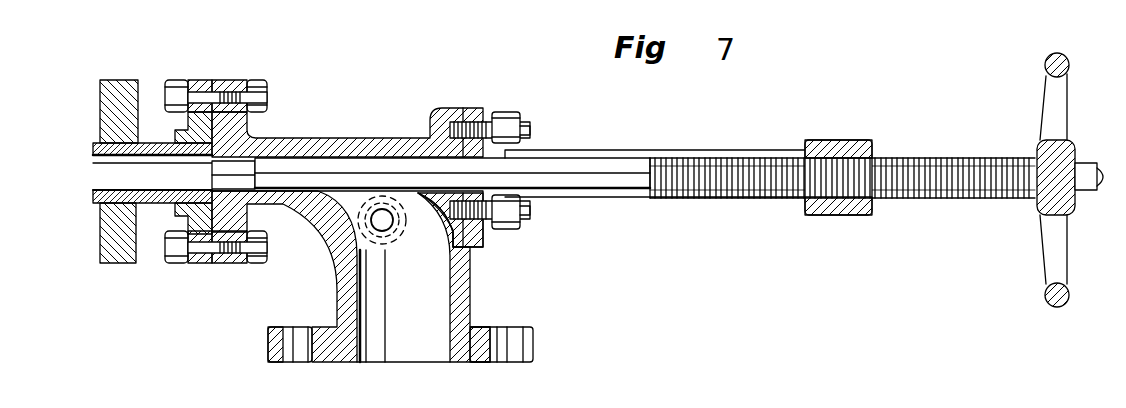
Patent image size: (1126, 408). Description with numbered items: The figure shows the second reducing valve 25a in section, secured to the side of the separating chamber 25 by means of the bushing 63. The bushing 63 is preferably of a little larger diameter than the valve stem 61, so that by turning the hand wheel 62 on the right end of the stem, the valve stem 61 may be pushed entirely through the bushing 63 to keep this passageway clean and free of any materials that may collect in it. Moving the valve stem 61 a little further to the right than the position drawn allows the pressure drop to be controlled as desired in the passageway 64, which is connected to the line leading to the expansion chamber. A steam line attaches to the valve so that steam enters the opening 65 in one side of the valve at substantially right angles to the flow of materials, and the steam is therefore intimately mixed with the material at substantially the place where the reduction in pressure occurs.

The separating chamber 25 is at (107, 103).
The bushing 63 is at (158, 143).
The second reducing valve 25a is at (389, 138).
The valve stem 61 is at (329, 165).
The passageway 64 is at (372, 276).
The opening 65 is at (388, 227).
The hand wheel 62 is at (1065, 301).